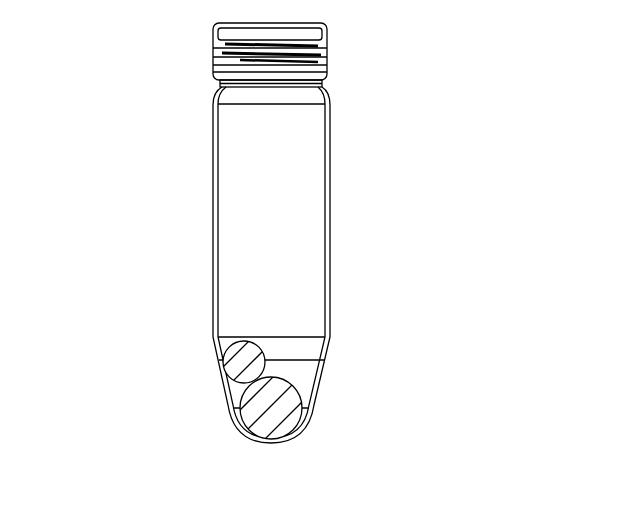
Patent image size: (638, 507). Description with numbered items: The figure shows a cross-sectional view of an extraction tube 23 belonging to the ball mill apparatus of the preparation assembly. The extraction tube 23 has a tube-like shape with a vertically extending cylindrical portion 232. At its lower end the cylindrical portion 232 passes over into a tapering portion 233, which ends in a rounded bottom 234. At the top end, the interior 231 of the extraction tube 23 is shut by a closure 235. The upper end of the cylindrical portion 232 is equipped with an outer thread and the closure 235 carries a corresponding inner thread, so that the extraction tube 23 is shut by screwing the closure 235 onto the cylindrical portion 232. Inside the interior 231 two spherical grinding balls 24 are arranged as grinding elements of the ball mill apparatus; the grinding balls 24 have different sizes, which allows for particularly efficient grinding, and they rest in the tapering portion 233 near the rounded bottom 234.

The extraction tube 23 is at (147, 88).
The grinding balls 24 is at (243, 353).
The interior 231 is at (288, 223).
The cylindrical portion 232 is at (373, 265).
The tapering portion 233 is at (327, 373).
The rounded bottom 234 is at (287, 438).
The closure 235 is at (327, 53).